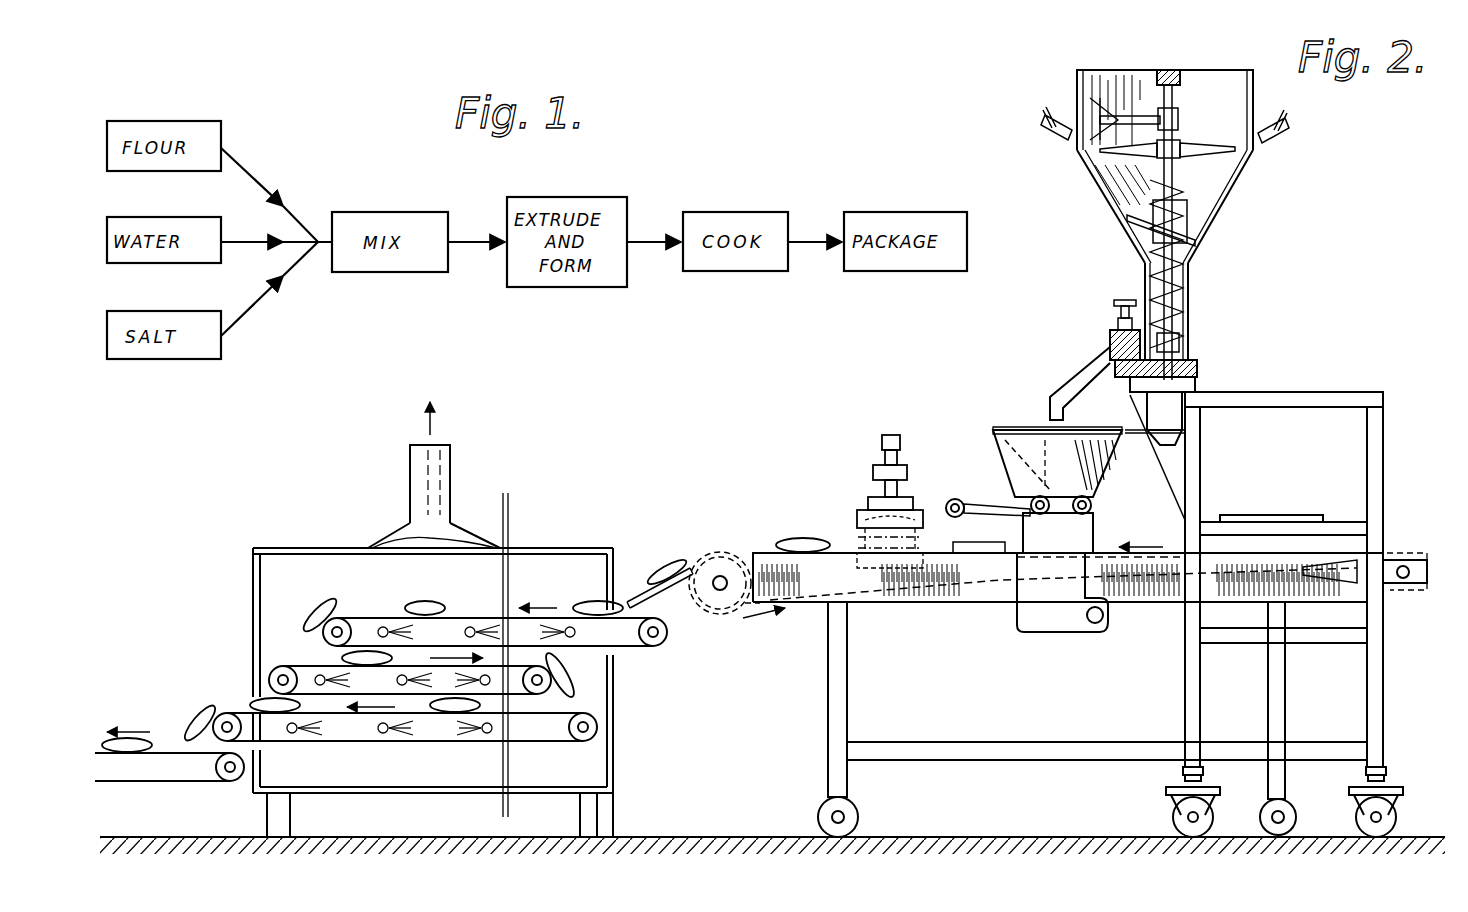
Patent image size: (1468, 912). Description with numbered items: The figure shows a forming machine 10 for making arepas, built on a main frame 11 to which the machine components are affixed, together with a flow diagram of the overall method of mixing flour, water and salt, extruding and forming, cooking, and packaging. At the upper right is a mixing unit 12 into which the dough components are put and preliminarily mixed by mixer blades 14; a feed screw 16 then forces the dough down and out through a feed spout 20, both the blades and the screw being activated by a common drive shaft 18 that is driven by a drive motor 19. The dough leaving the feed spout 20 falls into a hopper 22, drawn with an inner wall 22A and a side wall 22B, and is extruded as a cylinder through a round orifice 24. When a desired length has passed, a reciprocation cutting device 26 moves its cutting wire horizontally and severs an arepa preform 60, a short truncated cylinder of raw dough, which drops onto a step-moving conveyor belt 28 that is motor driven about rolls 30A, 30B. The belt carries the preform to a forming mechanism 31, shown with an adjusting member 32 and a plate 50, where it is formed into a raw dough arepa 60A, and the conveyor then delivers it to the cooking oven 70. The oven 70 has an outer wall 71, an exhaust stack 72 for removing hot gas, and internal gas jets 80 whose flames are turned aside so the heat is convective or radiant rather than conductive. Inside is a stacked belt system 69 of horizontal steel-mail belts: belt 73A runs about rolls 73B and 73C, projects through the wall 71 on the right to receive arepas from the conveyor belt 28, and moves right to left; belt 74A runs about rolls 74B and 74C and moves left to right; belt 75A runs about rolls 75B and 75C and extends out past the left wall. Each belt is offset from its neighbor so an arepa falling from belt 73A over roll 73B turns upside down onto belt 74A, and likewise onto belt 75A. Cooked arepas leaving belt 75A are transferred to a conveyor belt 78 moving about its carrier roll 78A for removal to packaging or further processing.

The forming machine 10 is at (1395, 466).
The main frame 11 is at (1338, 392).
The mixing unit 12 is at (1240, 215).
The mixer blades 14 is at (1163, 116).
The feed screw 16 is at (1187, 270).
The common drive shaft 18 is at (1190, 323).
The drive motor 19 is at (1185, 400).
The feed spout 20 is at (1085, 375).
The forming bowl 22 is at (997, 420).
The bowl inner wall 22A is at (1040, 490).
The bowl side wall 22B is at (1108, 478).
The orifice 24 is at (1100, 532).
The reciprocation cutting device 26 is at (985, 503).
The conveyor belt 28 is at (1328, 605).
The roll 30A is at (1403, 595).
The roll 30B is at (722, 628).
The forming mechanism 31 is at (863, 470).
The adjustment bolt 32 is at (882, 455).
The cutter plate 50 is at (855, 508).
The arepa preform 60 is at (978, 545).
The raw dough arepa 60A is at (655, 565).
The multi-tier conveyor system 69 is at (630, 737).
The cooking oven 70 is at (532, 528).
The outer wall 71 is at (603, 590).
The exhaust stack 72 is at (415, 463).
The conveyor belt 73A is at (598, 648).
The carrier roll 73B is at (340, 618).
The carrier roll 73C is at (665, 645).
The conveyor belt 74A is at (300, 663).
The carrier roll 74B is at (272, 675).
The carrier roll 74C is at (548, 695).
The conveyor belt 75A is at (527, 745).
The carrier roll 75B is at (232, 712).
The carrier roll 75C is at (593, 740).
The conveyor belt 78 is at (165, 755).
The carrier roll 78A is at (238, 775).
The gas jets 80 is at (385, 625).